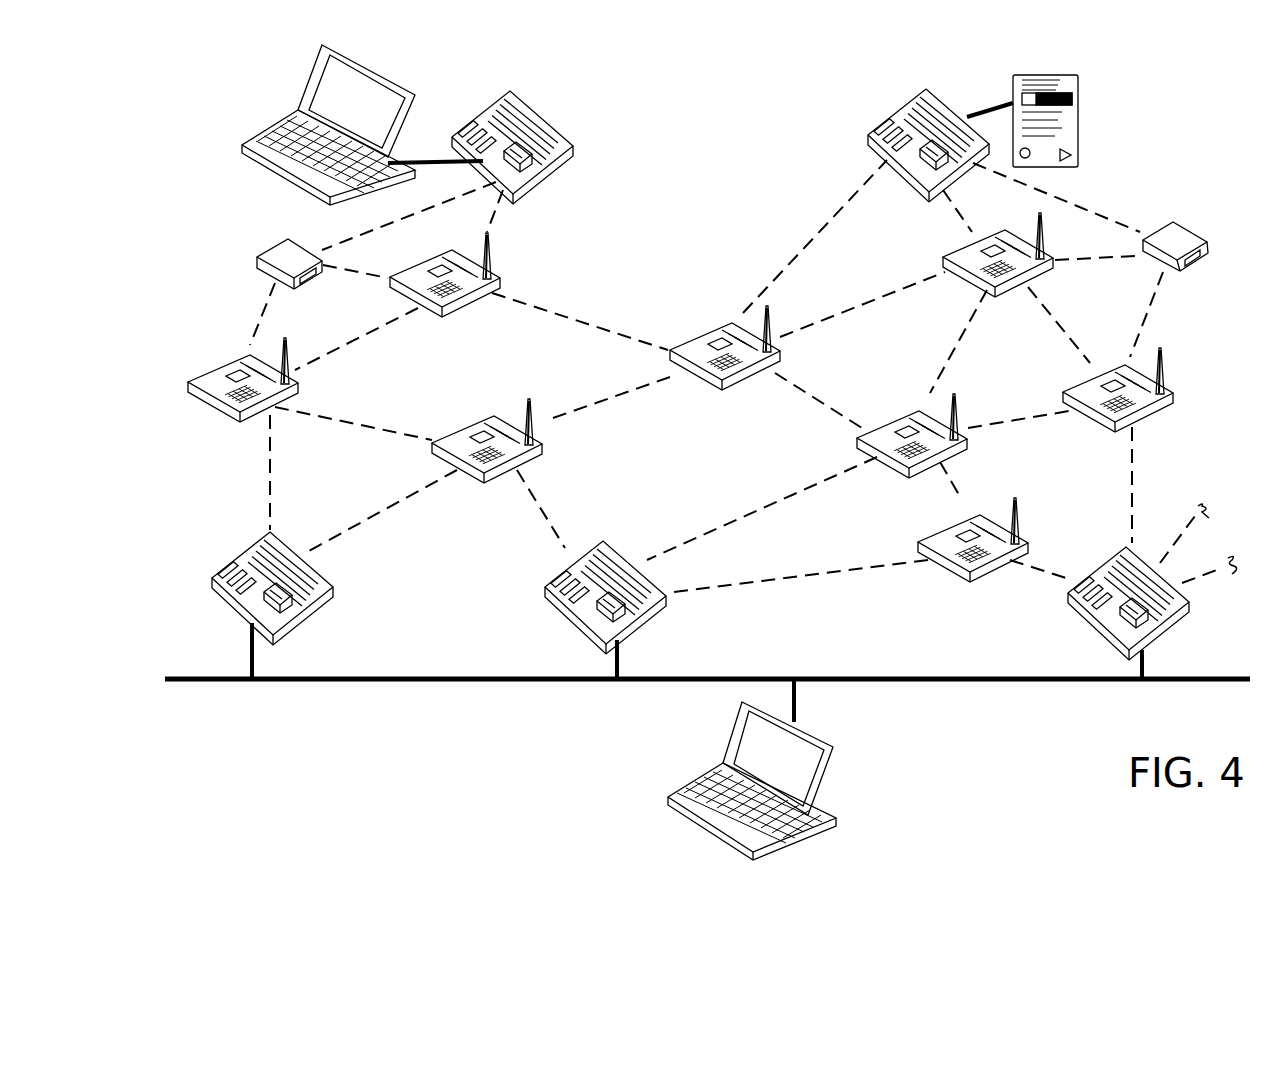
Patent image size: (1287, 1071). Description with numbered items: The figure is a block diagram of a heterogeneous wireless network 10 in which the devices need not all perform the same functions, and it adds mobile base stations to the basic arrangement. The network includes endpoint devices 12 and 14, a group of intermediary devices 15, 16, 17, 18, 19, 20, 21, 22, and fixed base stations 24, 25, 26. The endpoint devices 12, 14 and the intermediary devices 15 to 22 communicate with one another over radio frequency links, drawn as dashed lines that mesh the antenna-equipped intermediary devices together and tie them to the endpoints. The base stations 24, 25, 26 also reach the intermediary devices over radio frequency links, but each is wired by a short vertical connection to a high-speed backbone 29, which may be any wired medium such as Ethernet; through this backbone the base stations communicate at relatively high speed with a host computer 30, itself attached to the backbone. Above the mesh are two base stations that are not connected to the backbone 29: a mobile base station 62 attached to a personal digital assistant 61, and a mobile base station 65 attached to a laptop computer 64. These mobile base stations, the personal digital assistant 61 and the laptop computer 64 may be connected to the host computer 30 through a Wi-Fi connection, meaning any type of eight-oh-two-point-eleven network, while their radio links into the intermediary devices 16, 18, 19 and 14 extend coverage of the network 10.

The wireless network 10 is at (1214, 152).
The endpoint device 12 is at (257, 258).
The endpoint device 14 is at (1212, 243).
The intermediary device 15 is at (203, 373).
The intermediary device 16 is at (453, 308).
The intermediary device 17 is at (495, 415).
The intermediary device 18 is at (717, 323).
The intermediary device 19 is at (1008, 285).
The intermediary device 20 is at (912, 412).
The intermediary device 21 is at (1153, 412).
The intermediary device 22 is at (937, 537).
The base station 24 is at (237, 553).
The base station 25 is at (557, 605).
The base station 26 is at (1088, 617).
The high-speed backbone 29 is at (576, 683).
The host computer 30 is at (700, 783).
The personal digital assistant (PDA) 61 is at (1080, 120).
The base station 62 is at (870, 133).
The laptop computer 64 is at (242, 146).
The base station 65 is at (533, 182).